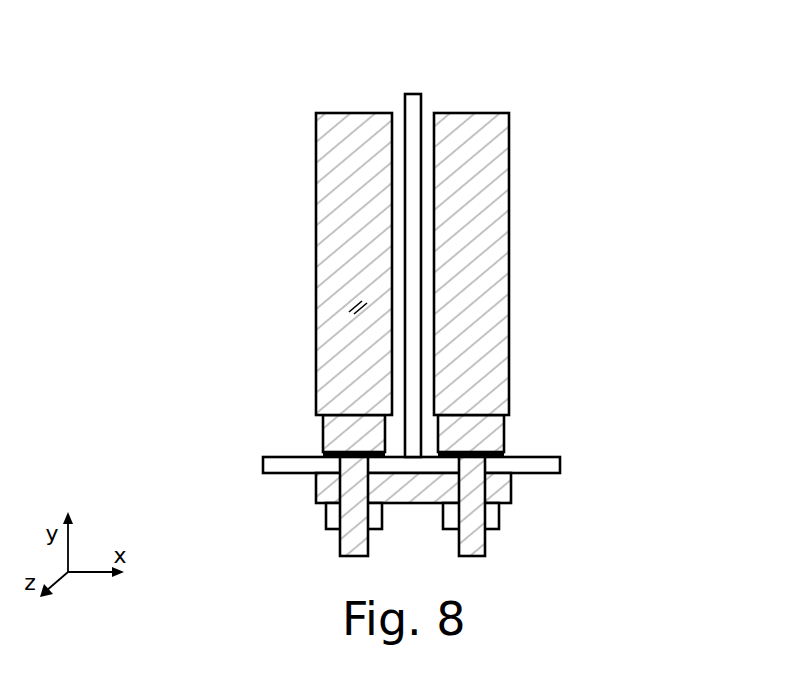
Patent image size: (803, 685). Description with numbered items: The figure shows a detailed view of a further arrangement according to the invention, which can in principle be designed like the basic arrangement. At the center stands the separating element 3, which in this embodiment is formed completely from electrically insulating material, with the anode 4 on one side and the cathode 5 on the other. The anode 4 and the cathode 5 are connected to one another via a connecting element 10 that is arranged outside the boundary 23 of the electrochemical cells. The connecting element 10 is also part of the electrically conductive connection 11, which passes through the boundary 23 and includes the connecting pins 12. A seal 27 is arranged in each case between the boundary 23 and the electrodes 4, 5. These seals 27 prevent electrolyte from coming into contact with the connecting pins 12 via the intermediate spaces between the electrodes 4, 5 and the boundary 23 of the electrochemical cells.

The separating element 3 is at (412, 94).
The anode 4 is at (509, 143).
The cathode 5 is at (316, 143).
The connecting element 10 is at (512, 490).
The electrically conductive connection 11 is at (443, 532).
The connecting pin 12 is at (487, 538).
The boundary 23 is at (560, 466).
The seal 27 is at (378, 451).